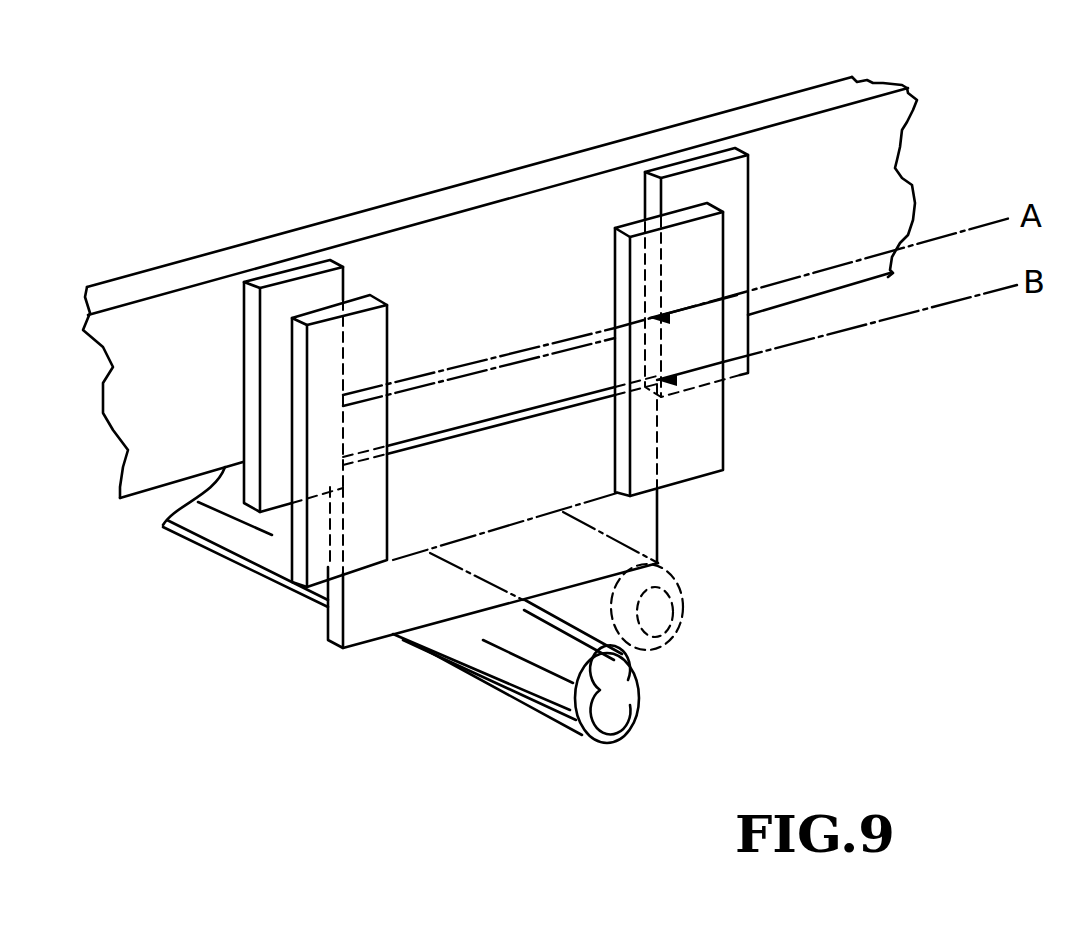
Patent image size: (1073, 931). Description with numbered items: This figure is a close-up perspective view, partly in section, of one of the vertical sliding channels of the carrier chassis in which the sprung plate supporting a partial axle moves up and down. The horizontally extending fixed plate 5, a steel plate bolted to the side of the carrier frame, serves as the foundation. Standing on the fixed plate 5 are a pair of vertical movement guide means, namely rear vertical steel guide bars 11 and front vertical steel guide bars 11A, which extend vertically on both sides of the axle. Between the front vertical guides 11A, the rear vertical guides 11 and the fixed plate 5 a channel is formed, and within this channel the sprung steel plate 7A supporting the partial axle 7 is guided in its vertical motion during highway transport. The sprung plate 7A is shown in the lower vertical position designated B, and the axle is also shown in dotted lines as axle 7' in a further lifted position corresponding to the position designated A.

The fixed plate 5 is at (173, 333).
The rear vertical guide 11 is at (287, 293).
The front vertical guide 11A is at (367, 333).
The sprung plate 7A is at (513, 383).
The axle 7 is at (516, 690).
The axle in lifted position 7' is at (689, 553).